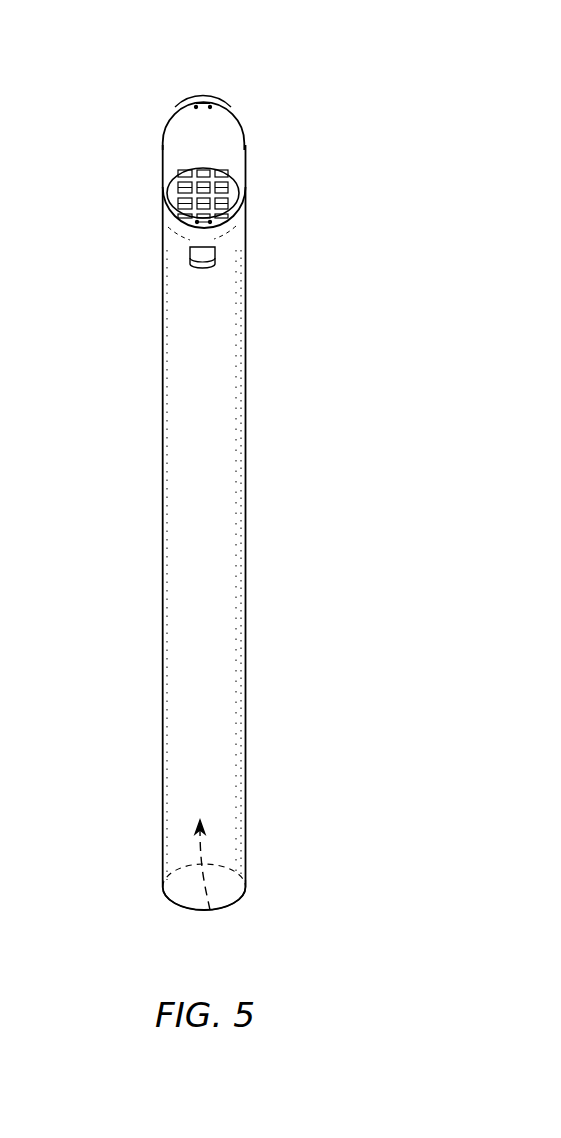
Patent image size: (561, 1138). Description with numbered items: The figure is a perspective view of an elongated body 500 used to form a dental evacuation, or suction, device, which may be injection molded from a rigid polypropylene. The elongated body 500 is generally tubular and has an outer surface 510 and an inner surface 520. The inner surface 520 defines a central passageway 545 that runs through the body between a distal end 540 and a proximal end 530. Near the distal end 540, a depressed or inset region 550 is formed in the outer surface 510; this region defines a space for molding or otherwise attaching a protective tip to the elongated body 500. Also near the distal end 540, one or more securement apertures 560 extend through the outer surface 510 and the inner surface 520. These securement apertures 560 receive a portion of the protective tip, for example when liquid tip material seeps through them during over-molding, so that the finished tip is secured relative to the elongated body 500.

The elongated body 500 is at (354, 90).
The outer surface 510 is at (175, 356).
The inner surface 520 is at (214, 138).
The proximal end 530 is at (254, 884).
The distal end 540 is at (162, 109).
The central passageway 545 is at (210, 910).
The depressed region 550 is at (240, 199).
The securement apertures 560 is at (210, 107).